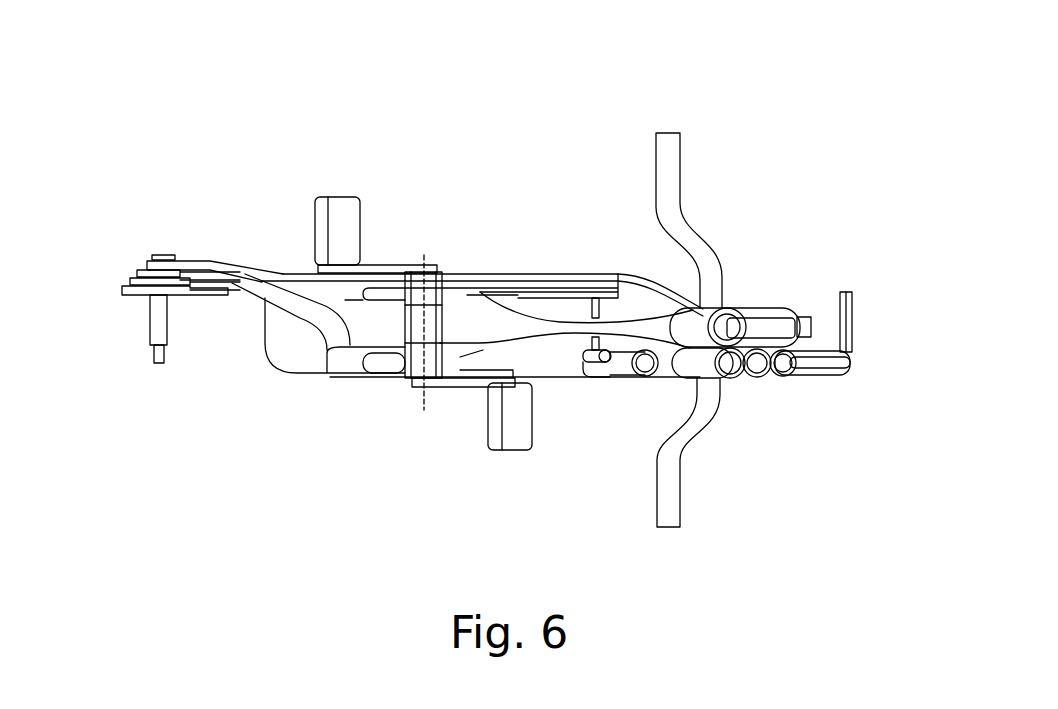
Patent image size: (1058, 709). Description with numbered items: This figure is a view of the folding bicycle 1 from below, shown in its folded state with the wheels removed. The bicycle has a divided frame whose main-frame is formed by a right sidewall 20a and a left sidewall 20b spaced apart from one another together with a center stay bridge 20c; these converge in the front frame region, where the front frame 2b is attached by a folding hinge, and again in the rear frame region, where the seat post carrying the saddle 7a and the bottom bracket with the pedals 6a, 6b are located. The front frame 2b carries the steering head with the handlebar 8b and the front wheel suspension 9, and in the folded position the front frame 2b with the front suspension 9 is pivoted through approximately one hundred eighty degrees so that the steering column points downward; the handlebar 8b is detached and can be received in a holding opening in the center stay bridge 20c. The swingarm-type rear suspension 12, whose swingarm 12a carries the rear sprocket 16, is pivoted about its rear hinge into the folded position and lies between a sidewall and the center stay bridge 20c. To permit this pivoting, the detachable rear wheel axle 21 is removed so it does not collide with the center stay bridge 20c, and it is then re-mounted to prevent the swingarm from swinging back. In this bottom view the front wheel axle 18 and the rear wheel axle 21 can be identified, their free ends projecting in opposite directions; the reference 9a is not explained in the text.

The folding bicycle 1 is at (185, 143).
The front frame 2b is at (712, 313).
The pedal 6a is at (338, 203).
The pedal 6b is at (515, 442).
The saddle 7a is at (295, 363).
The handlebar 8b is at (672, 500).
The front wheel suspension 9 is at (767, 445).
The contact ring 9a is at (767, 368).
The rear suspension 12 is at (170, 354).
The swingarm 12a is at (193, 258).
The rear sprocket 16 is at (130, 278).
The front wheel axle 18 is at (843, 295).
The right sidewall 20a is at (622, 275).
The left sidewall 20b is at (580, 385).
The center stay bridge 20c is at (548, 325).
The rear wheel axle 21 is at (155, 367).